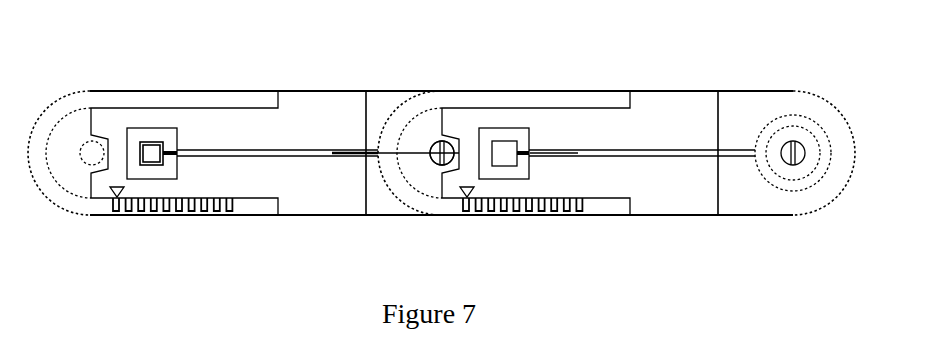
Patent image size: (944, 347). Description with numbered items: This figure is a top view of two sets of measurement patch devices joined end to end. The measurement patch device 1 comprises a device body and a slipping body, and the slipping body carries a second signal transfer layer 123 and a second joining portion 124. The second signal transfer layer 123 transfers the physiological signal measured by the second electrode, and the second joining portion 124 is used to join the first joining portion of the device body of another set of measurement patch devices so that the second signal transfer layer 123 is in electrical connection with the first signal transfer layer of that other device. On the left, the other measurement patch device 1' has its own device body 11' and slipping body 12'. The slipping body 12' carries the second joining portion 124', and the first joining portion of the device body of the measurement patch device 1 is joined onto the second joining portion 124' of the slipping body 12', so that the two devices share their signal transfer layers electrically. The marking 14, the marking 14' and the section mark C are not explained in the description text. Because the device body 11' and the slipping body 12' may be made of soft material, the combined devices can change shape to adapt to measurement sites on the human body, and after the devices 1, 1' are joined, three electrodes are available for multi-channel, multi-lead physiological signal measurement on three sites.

The device body 11' is at (59, 123).
The socket hole of first module 14' is at (104, 104).
The measurement patch device 1' is at (212, 123).
The slipping body 12' is at (229, 123).
The second joining portion 124' is at (424, 98).
The socket hole 14 is at (474, 98).
The measurement patch device 1 is at (610, 127).
The second signal transfer layer 123 is at (672, 148).
The second joining portion 124 is at (812, 127).
The cross-section mark C is at (341, 154).